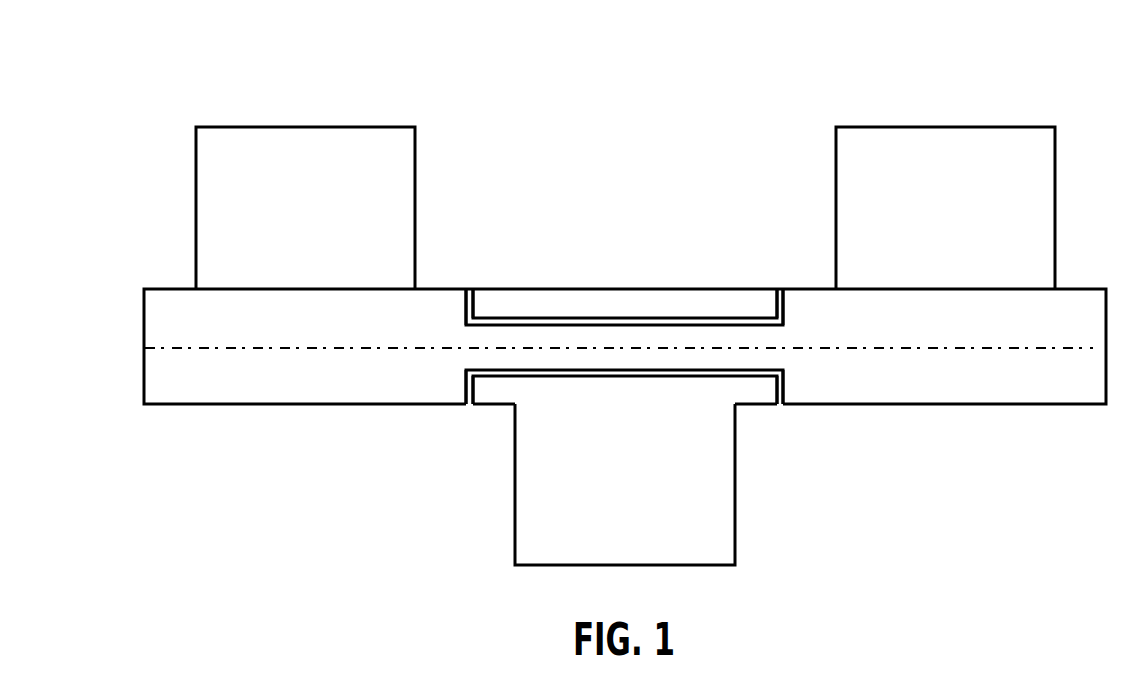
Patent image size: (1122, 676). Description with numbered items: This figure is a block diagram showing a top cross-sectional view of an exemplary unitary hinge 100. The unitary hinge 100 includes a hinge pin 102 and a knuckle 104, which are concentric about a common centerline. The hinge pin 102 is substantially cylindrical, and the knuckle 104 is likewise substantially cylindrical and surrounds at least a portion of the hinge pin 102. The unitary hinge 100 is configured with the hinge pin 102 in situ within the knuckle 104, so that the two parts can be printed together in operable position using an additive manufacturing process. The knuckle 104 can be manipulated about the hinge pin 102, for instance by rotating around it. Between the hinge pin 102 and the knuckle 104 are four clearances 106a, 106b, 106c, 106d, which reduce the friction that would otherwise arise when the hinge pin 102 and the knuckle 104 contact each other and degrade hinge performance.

The unitary hinge 100 is at (80, 70).
The hinge pin 102 is at (693, 344).
The knuckle 104 is at (574, 276).
The clearance 106a is at (468, 428).
The clearance 106b is at (783, 428).
The clearance 106c is at (471, 271).
The clearance 106d is at (783, 271).